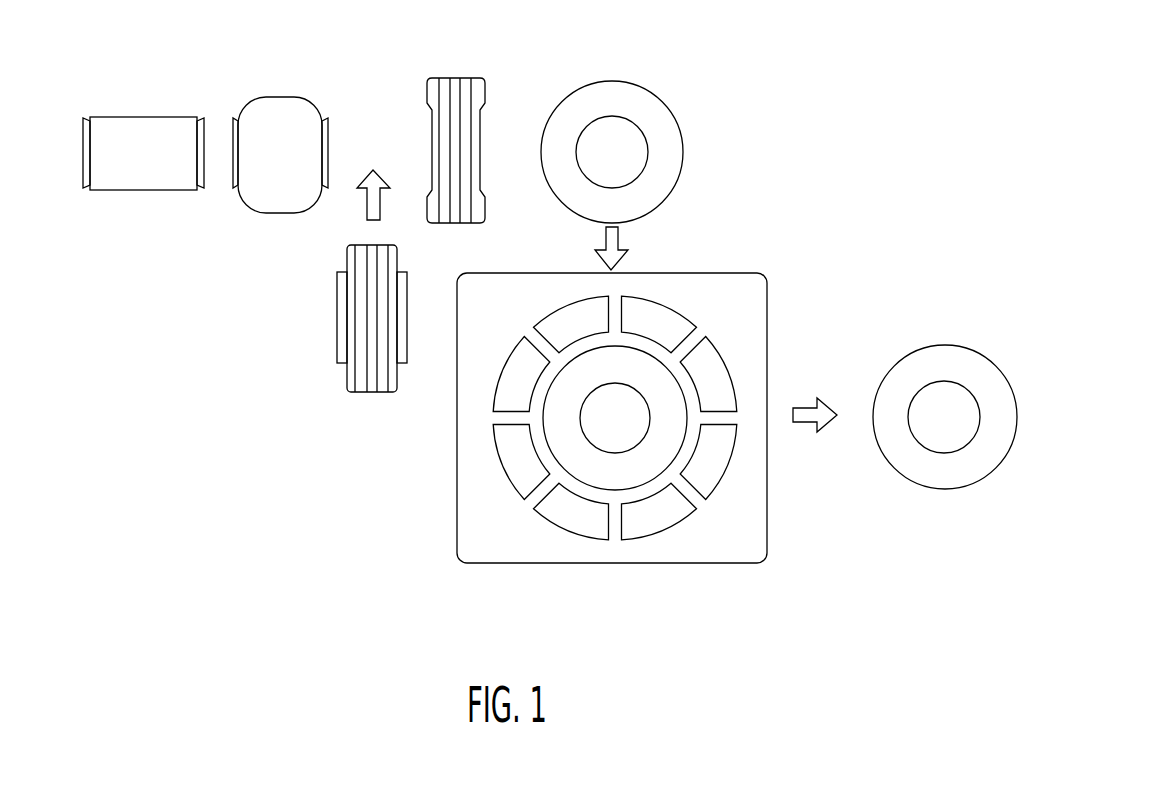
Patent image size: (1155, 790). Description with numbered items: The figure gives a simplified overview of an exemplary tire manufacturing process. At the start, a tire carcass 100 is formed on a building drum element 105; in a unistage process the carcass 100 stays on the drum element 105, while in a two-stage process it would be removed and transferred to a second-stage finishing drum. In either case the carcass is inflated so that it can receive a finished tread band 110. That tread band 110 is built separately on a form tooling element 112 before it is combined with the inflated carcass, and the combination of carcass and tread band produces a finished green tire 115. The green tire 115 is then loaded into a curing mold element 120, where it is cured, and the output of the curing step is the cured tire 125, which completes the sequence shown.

The tire carcass 100 is at (135, 122).
The building drum element 105 is at (87, 188).
The tread band 110 is at (352, 375).
The form tooling element 112 is at (405, 276).
The green tire 115 is at (478, 78).
The curing mold element 120 is at (722, 537).
The cured tire 125 is at (1010, 373).